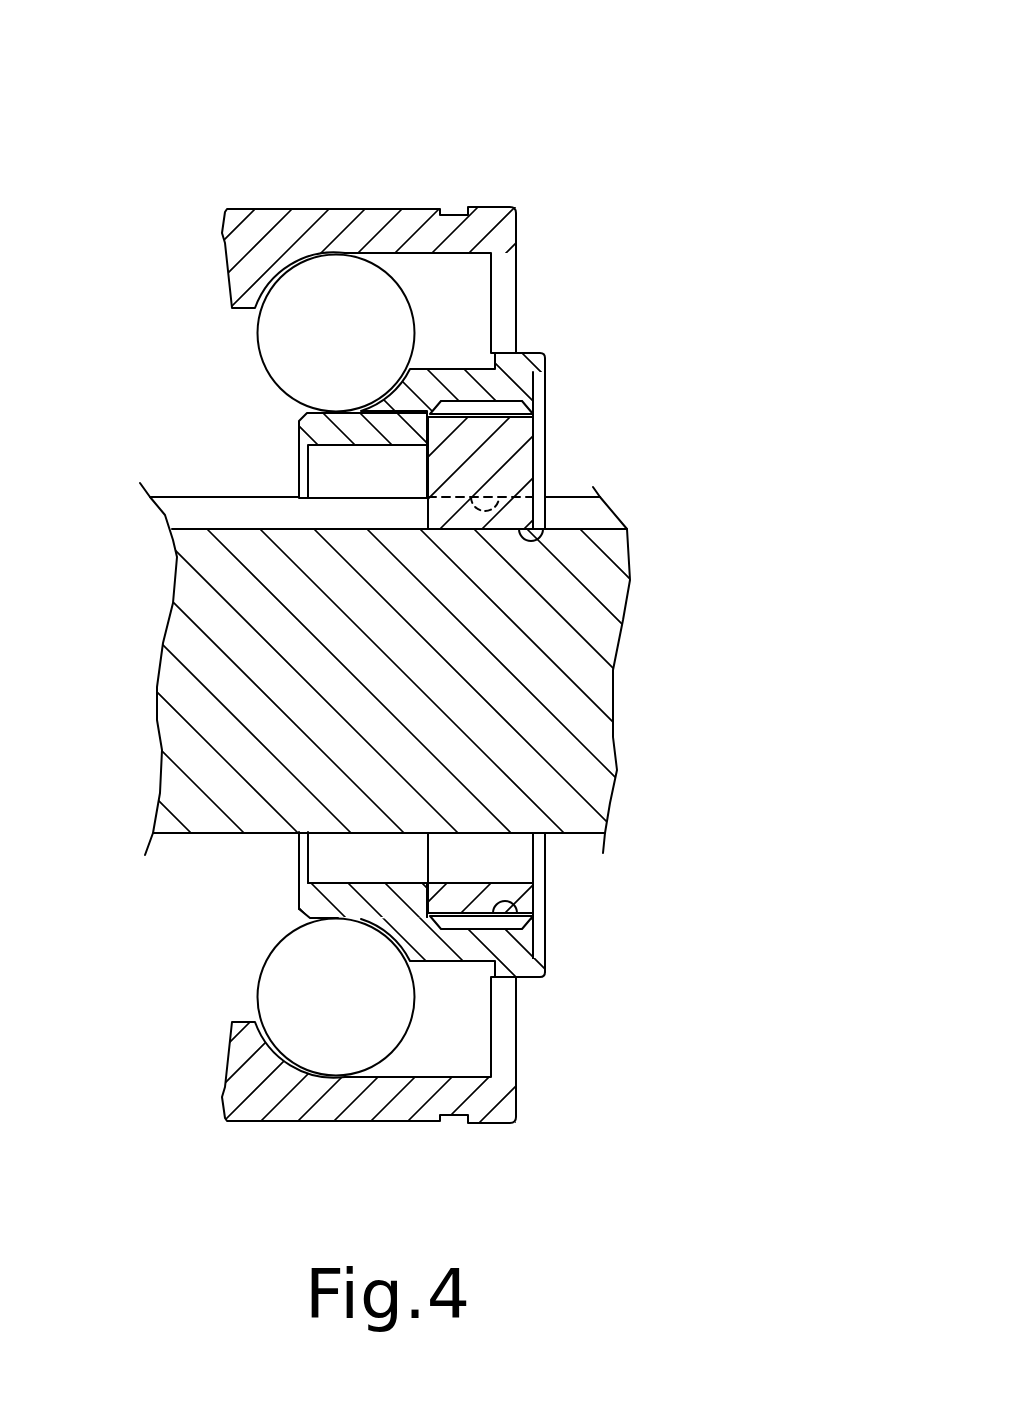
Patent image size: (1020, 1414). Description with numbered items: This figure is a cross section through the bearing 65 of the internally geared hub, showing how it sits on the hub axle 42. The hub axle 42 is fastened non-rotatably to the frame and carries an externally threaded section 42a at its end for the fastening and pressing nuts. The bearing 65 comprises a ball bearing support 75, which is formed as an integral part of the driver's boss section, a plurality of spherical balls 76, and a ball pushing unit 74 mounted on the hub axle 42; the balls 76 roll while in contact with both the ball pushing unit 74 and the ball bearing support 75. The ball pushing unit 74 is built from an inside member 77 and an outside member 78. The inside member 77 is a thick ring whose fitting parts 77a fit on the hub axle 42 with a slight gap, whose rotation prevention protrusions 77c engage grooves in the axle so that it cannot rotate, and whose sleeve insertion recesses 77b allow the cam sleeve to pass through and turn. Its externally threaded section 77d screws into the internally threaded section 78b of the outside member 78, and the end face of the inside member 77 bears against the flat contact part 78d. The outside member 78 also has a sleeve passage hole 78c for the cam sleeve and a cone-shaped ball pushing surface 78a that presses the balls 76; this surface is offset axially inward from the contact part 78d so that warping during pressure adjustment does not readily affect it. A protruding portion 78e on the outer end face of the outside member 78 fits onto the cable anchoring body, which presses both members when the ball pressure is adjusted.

The bearing 65 is at (445, 586).
The ball pushing unit 74 is at (437, 619).
The ball bearing support 75 is at (343, 215).
The spherical balls 76 is at (307, 347).
The inside member 77 is at (487, 693).
The fitting parts 77a is at (548, 462).
The sleeve insertion recesses 77b is at (504, 885).
The rotation prevention protrusions 77c is at (543, 538).
The externally threaded section 77d is at (505, 932).
The outside member 78 is at (413, 756).
The ball pushing surface 78a is at (352, 938).
The internally threaded section 78b is at (527, 900).
The sleeve passage hole 78c is at (300, 862).
The contact part 78d is at (428, 889).
The protruding portion 78e is at (545, 972).
The hub axle 42 is at (445, 669).
The externally threaded section 42a is at (598, 530).